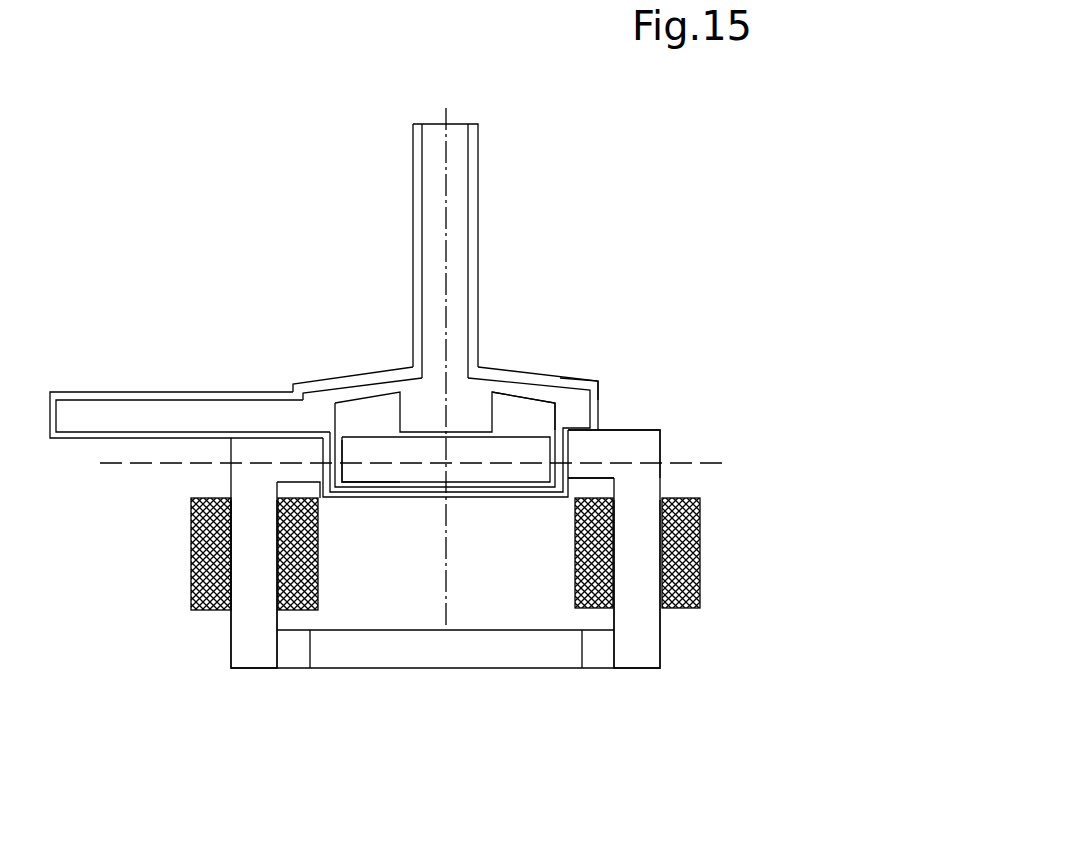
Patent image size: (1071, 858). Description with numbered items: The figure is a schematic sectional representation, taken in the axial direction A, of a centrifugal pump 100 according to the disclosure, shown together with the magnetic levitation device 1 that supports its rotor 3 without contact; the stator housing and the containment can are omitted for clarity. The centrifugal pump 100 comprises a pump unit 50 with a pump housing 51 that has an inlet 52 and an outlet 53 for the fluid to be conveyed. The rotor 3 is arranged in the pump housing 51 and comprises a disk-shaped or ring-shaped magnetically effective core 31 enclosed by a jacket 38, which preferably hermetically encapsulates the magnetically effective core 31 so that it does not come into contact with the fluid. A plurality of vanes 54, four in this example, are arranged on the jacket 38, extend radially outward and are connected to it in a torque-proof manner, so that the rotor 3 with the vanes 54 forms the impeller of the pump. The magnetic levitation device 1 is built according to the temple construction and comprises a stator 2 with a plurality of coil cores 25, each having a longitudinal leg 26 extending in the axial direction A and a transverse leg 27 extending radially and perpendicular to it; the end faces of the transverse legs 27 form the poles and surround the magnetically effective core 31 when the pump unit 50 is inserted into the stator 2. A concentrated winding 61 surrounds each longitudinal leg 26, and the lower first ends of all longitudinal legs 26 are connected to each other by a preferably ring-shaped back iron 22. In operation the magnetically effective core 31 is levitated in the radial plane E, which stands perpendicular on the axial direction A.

The centrifugal pump 100 is at (575, 173).
The pump unit 50 is at (445, 310).
The inlet 52 is at (413, 199).
The outlet 53 is at (155, 390).
The pump housing 51 is at (603, 380).
The vanes 54 is at (362, 420).
The rotor 3 is at (543, 395).
The jacket 38 is at (526, 485).
The magnetically effective core 31 is at (383, 472).
The transverse leg 27 is at (600, 448).
The magnetic levitation device 1 is at (250, 683).
The stator 2 is at (633, 668).
The longitudinal leg 26 is at (245, 642).
The back iron 22 is at (598, 657).
The coil core 25 is at (212, 480).
The concentrated winding 61 is at (702, 560).
The axial direction A is at (447, 217).
The radial plane E is at (122, 467).